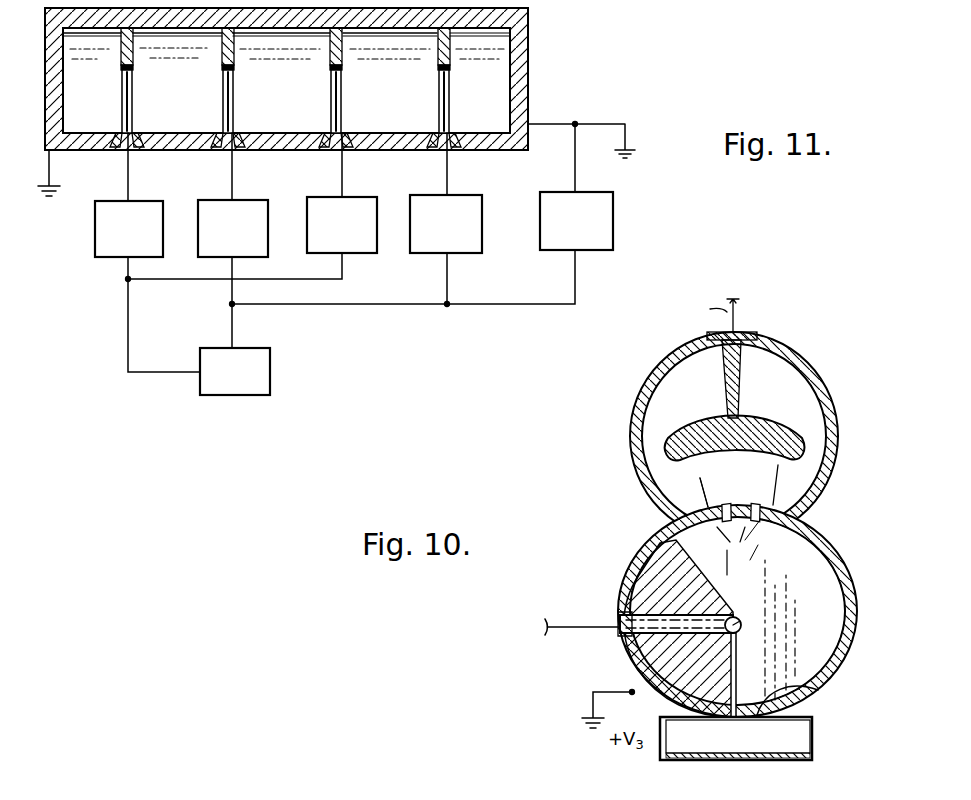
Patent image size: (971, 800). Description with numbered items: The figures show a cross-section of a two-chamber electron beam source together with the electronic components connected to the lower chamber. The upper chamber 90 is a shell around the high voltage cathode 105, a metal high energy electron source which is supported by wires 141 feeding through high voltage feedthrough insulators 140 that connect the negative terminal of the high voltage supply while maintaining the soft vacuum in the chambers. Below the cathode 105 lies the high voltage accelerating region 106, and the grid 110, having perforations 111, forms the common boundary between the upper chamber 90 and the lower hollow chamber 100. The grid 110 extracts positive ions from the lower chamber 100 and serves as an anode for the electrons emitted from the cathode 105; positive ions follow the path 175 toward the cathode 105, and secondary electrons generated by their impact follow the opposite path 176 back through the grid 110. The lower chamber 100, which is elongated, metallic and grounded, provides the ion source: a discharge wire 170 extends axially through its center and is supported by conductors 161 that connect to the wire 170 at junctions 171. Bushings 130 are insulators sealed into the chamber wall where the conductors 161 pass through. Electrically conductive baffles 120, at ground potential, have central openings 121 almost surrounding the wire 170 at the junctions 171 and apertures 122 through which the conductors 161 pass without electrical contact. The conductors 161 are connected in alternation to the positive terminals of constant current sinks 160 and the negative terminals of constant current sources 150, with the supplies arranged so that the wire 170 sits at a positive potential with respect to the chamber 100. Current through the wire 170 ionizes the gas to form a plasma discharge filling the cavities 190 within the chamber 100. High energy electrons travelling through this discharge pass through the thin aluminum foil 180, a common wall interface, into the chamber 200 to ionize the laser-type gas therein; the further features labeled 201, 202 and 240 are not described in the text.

In FIG. 10, the upper chamber 90 is at (839, 470).
In FIG. 11, the lower hollow chamber 100 is at (533, 62).
In FIG. 10, the lower hollow chamber 100 is at (858, 640).
In FIG. 10, the high voltage cathode 105 is at (794, 431).
In FIG. 10, the high voltage accelerating region 106 is at (752, 487).
In FIG. 10, the grid 110 is at (769, 503).
In FIG. 10, the perforations 111 is at (730, 600).
In FIG. 10, the electrically conductive baffles 120 is at (803, 557).
In FIG. 11, the central openings 121 is at (120, 76).
In FIG. 10, the central openings 121 is at (742, 612).
In FIG. 11, the apertures 122 is at (220, 110).
In FIG. 10, the apertures 122 is at (660, 610).
In FIG. 11, the bushings 130 is at (441, 127).
In FIG. 10, the bushings 130 is at (616, 615).
In FIG. 10, the high voltage feedthrough insulators 140 is at (723, 378).
In FIG. 10, the wires 141 is at (737, 381).
In FIG. 11, the constant current sources 150 is at (264, 201).
In FIG. 11, the constant current sinks 160 is at (101, 250).
In FIG. 11, the conductors 161 is at (230, 172).
In FIG. 10, the conductors 161 is at (584, 629).
In FIG. 11, the discharge wire 170 is at (357, 70).
In FIG. 11, the junctions 171 is at (330, 77).
In FIG. 10, the junctions 171 is at (740, 635).
In FIG. 10, the positive ion path 175 is at (722, 548).
In FIG. 10, the electron path 176 is at (702, 486).
In FIG. 10, the thin aluminum foil 180 is at (812, 692).
In FIG. 11, the cavities 190 is at (190, 124).
In FIG. 11, the chamber 200 is at (700, 0).
In FIG. 10, the chamber 200 is at (812, 741).
In FIG. 11, the collector part 201 is at (703, 35).
In FIG. 11, the collector part 202 is at (177, 0).
In FIG. 11, the collector part 240 is at (197, 0).